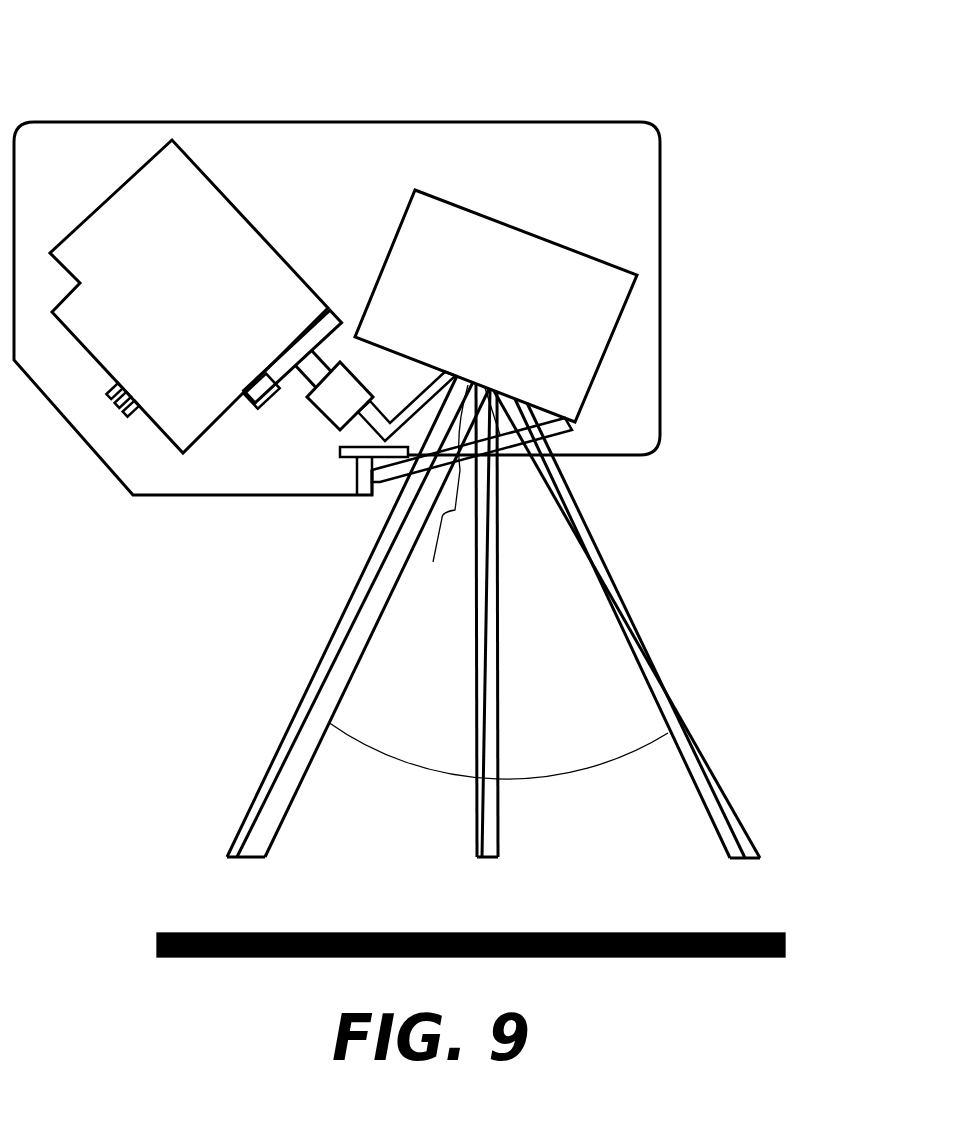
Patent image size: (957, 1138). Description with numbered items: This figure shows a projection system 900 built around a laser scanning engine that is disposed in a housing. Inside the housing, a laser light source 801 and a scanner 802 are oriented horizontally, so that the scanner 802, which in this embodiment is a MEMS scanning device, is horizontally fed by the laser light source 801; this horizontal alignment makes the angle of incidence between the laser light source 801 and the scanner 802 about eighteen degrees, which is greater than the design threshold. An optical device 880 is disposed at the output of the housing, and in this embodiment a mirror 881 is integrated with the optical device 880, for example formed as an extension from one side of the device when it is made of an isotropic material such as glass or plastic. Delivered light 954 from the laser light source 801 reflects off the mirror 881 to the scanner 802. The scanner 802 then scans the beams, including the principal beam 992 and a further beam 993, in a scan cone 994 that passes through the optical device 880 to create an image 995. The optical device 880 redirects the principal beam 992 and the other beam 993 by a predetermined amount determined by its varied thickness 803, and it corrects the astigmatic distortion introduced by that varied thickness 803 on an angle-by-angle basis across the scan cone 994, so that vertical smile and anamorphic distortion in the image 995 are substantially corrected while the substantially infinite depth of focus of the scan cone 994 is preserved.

The projection system 900 is at (142, 90).
The laser light source 801 is at (193, 283).
The scanner 802 is at (530, 319).
The delivered light 954 is at (303, 377).
The mirror 881 is at (357, 497).
The optical device 880 is at (441, 486).
The varied thickness 803 is at (500, 435).
The principal beam 992 is at (478, 670).
The beam 993 is at (608, 568).
The scan cone 994 is at (430, 778).
The image 995 is at (268, 933).